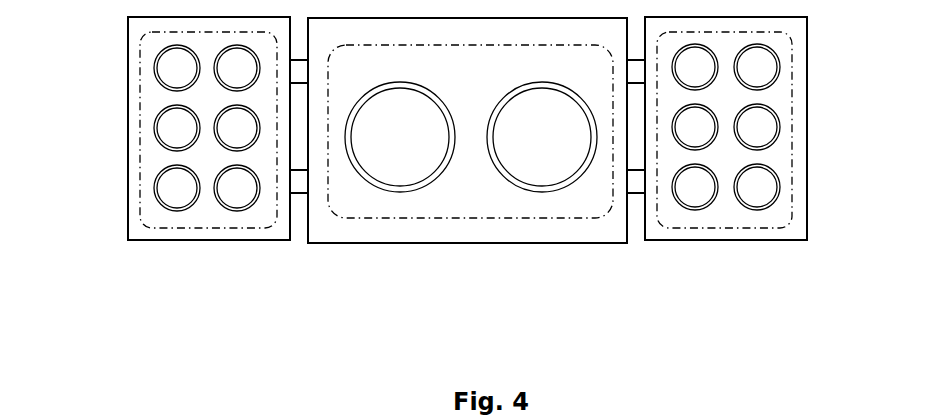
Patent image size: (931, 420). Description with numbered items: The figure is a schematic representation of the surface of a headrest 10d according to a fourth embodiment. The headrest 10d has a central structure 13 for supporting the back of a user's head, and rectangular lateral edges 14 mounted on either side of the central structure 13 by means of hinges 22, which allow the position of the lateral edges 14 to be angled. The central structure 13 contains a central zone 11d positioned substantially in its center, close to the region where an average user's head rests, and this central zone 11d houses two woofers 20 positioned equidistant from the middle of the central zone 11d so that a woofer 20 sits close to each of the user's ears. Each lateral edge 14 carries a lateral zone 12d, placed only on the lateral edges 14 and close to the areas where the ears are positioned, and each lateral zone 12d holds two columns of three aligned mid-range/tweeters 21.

The headrest 10d is at (158, 307).
The lateral zone 12d is at (222, 240).
The central structure 13 is at (372, 245).
The lateral edges 14 is at (650, 243).
The central zone 11d is at (538, 220).
The woofer 20 is at (538, 155).
The mid-range/tweeter 21 is at (157, 140).
The hinges 22 is at (302, 197).